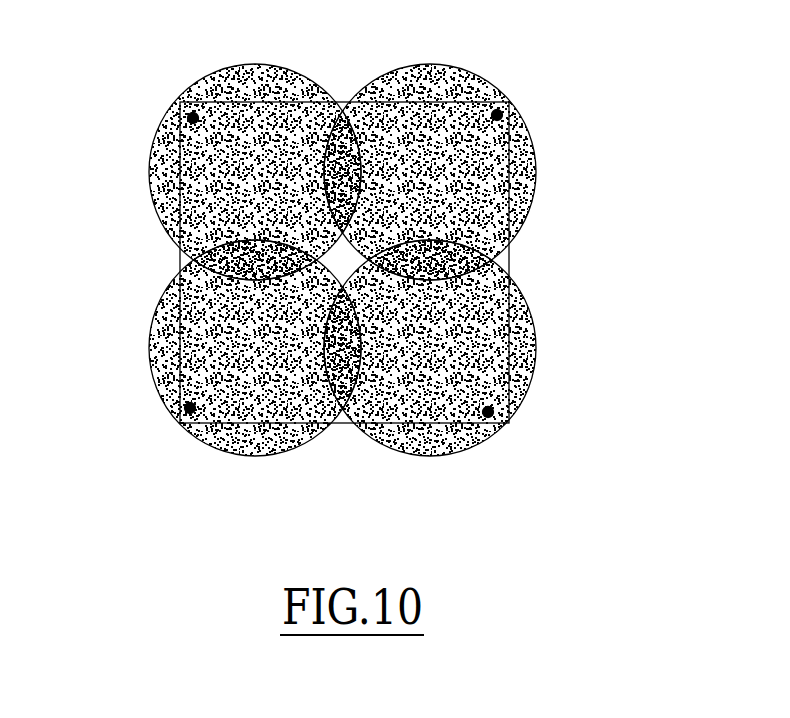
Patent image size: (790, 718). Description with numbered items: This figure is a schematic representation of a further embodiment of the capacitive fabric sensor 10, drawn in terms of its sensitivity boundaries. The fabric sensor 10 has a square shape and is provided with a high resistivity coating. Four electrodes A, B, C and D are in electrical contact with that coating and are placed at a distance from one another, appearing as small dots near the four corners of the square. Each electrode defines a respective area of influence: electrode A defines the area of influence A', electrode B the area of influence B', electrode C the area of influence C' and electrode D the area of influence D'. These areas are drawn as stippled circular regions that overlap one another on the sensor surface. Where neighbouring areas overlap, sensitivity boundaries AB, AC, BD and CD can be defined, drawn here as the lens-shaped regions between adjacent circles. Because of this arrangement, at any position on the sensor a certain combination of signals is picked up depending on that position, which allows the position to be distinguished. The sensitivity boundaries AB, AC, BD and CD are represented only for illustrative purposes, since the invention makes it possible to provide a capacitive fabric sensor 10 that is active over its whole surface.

The fabric sensor 10 is at (106, 78).
The electrode A is at (154, 62).
The electrode B is at (462, 60).
The electrode C is at (143, 459).
The electrode D is at (444, 463).
The area of influence A' is at (208, 172).
The area of influence B' is at (194, 348).
The area of influence C' is at (484, 172).
The area of influence D' is at (489, 348).
The sensitivity boundary AB is at (350, 102).
The sensitivity boundary AC is at (182, 260).
The sensitivity boundary BD is at (508, 248).
The sensitivity boundary CD is at (345, 425).